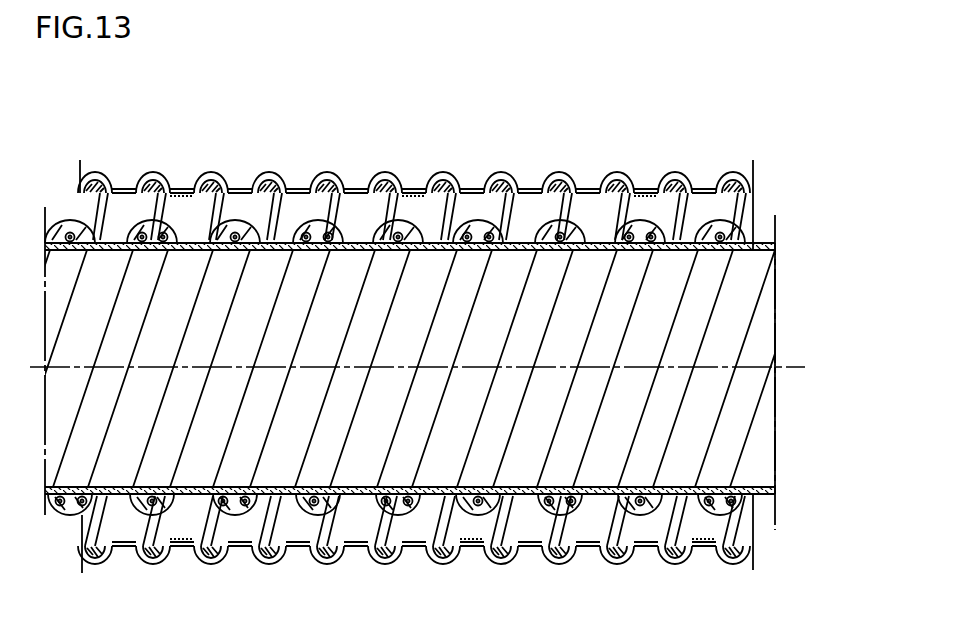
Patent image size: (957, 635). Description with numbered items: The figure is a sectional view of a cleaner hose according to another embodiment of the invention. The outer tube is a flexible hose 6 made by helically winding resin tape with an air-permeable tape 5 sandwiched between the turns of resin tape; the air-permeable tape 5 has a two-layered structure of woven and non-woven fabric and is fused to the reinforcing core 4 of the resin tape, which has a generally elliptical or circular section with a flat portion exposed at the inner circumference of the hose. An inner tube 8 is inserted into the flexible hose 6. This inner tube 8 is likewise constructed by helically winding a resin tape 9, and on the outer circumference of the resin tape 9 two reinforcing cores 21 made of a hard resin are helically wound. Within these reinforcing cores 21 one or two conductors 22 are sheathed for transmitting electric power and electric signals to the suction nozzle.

The reinforcing core 4 is at (390, 181).
The air-permeable tape 5 is at (413, 200).
The flexible hose 6 is at (415, 327).
The inner tube 8 is at (763, 240).
The resin tape 9 is at (112, 243).
The reinforcing core 21 is at (298, 238).
The conductor 22 is at (186, 194).